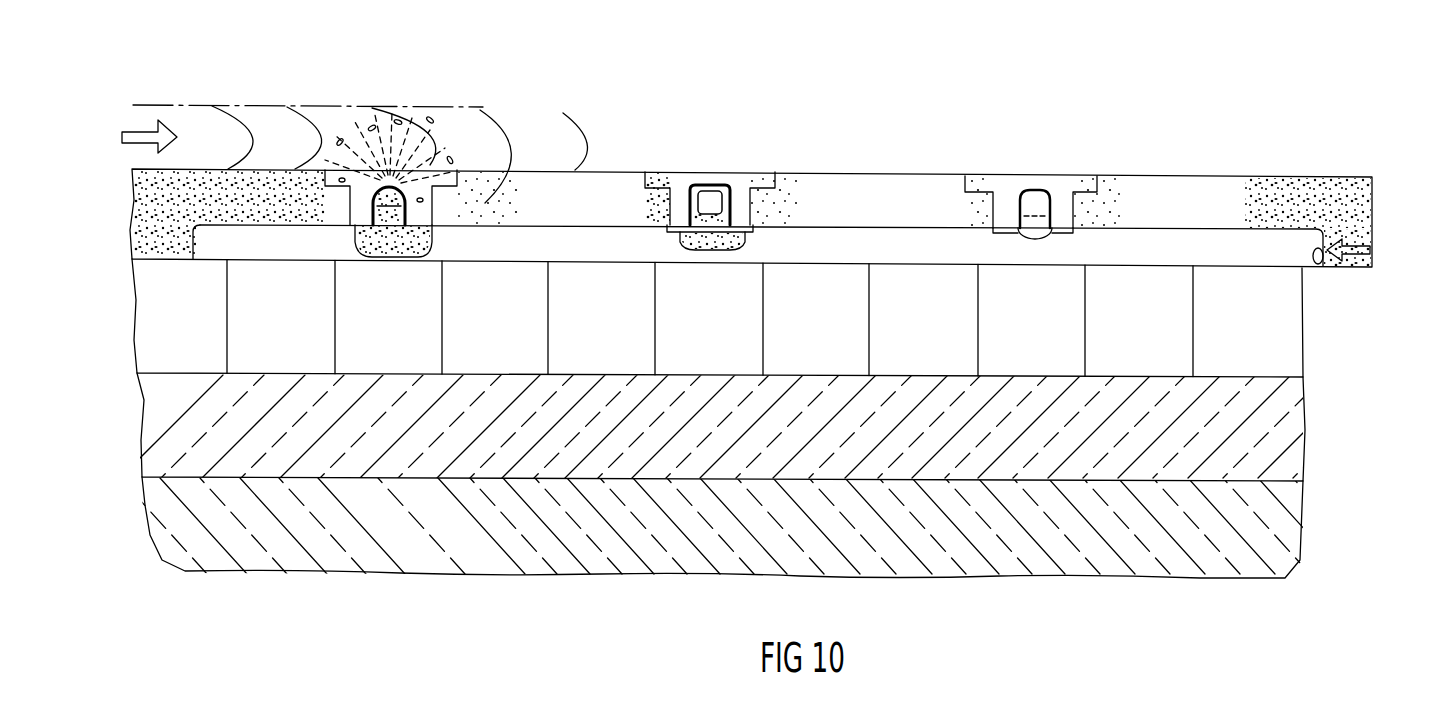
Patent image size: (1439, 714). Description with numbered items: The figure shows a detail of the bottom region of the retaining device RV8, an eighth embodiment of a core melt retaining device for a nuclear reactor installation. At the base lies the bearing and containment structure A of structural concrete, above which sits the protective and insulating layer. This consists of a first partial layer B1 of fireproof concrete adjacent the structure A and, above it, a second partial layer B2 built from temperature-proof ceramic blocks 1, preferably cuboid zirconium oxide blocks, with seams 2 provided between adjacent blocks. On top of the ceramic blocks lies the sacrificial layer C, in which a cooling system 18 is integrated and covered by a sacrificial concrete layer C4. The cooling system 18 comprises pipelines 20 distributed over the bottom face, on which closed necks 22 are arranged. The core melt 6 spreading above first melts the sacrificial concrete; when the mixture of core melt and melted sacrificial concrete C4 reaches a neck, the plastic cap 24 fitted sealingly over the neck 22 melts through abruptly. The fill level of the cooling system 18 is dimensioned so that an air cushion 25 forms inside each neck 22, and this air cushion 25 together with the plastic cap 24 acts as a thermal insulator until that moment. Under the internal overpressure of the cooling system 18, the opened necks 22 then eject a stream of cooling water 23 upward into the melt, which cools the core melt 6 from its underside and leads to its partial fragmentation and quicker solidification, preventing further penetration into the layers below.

The retaining device RV8 is at (716, 51).
The core melt 6 is at (263, 122).
The stream of cooling water 23 is at (363, 150).
The necks 22 is at (424, 167).
The plastic cap 24 is at (700, 186).
The air cushion 25 is at (720, 188).
The pipelines 20 is at (850, 242).
The sacrificial concrete layer C4 is at (1243, 197).
The sacrificial layer C is at (777, 207).
The cooling system 18 is at (1367, 274).
The second partial layer B2 is at (750, 318).
The first partial layer B1 is at (1316, 378).
The bearing and containment structure A is at (1316, 484).
The seams 2 is at (655, 318).
The ceramic blocks 1 is at (893, 320).